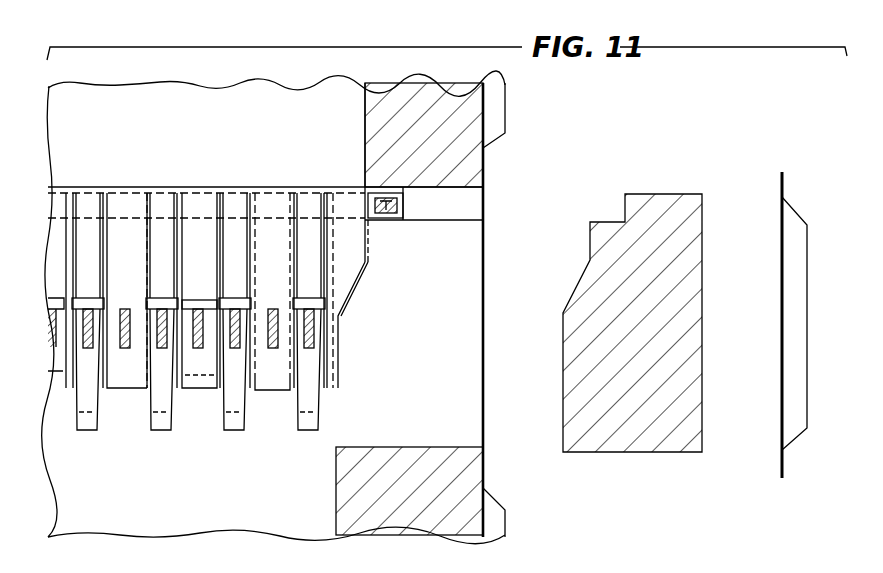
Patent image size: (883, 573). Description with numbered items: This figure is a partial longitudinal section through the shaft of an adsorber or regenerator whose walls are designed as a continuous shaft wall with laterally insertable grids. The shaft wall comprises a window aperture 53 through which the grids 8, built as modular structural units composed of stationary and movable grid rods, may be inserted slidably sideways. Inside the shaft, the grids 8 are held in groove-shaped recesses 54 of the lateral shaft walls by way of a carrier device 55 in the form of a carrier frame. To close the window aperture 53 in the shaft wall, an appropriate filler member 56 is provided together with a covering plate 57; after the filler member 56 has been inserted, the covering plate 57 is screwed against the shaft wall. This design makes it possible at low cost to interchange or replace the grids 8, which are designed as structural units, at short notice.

The grid 8 is at (348, 300).
The window aperture 53 is at (472, 170).
The groove-shaped recess 54 is at (460, 202).
The carrier device 55 is at (387, 212).
The filler member 56 is at (688, 240).
The covering plate 57 is at (797, 248).